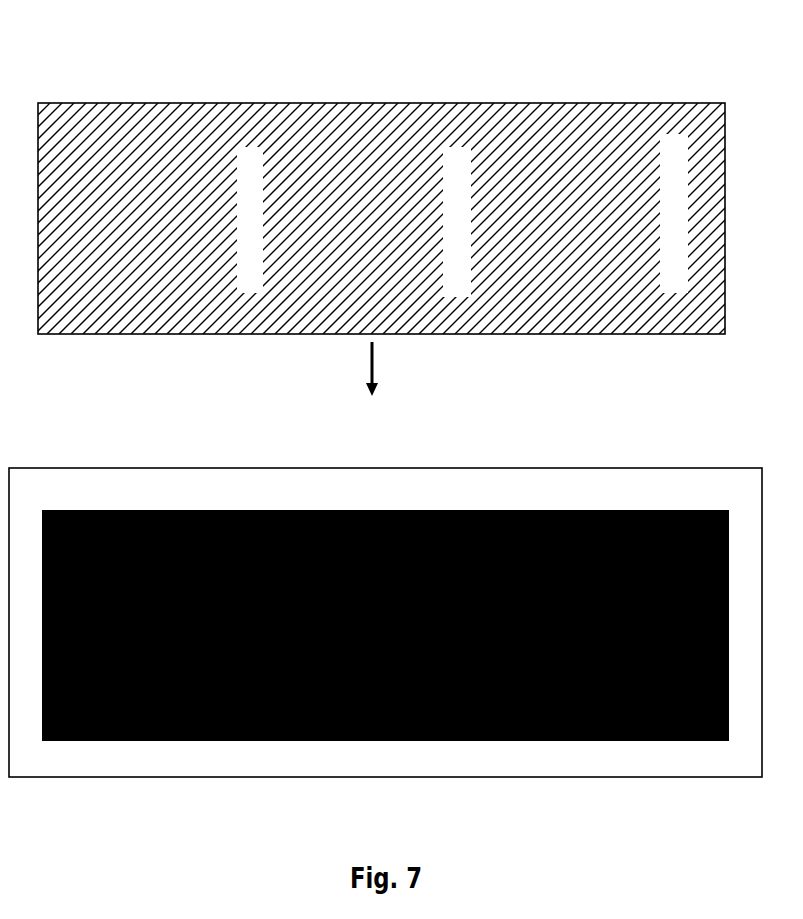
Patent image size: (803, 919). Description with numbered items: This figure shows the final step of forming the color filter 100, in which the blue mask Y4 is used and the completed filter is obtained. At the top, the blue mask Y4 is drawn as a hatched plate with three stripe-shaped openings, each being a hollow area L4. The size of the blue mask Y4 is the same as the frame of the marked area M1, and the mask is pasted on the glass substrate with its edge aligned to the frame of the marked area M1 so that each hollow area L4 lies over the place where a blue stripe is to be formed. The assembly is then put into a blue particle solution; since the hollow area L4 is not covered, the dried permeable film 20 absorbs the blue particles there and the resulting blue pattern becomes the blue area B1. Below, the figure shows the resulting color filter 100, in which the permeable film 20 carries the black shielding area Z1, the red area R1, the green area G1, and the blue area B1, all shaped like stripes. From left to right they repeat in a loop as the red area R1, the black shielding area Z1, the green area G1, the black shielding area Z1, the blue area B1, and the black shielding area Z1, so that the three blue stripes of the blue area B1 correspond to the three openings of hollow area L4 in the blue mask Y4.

The blue mask Y4 is at (167, 49).
The hollow area L4 is at (668, 145).
The color filter 100 is at (385, 605).
The permeable film 20 is at (583, 468).
The marked area M1 is at (173, 520).
The black shielding area Z1 is at (137, 625).
The red area R1 is at (94, 708).
The green area G1 is at (175, 708).
The blue area B1 is at (682, 708).